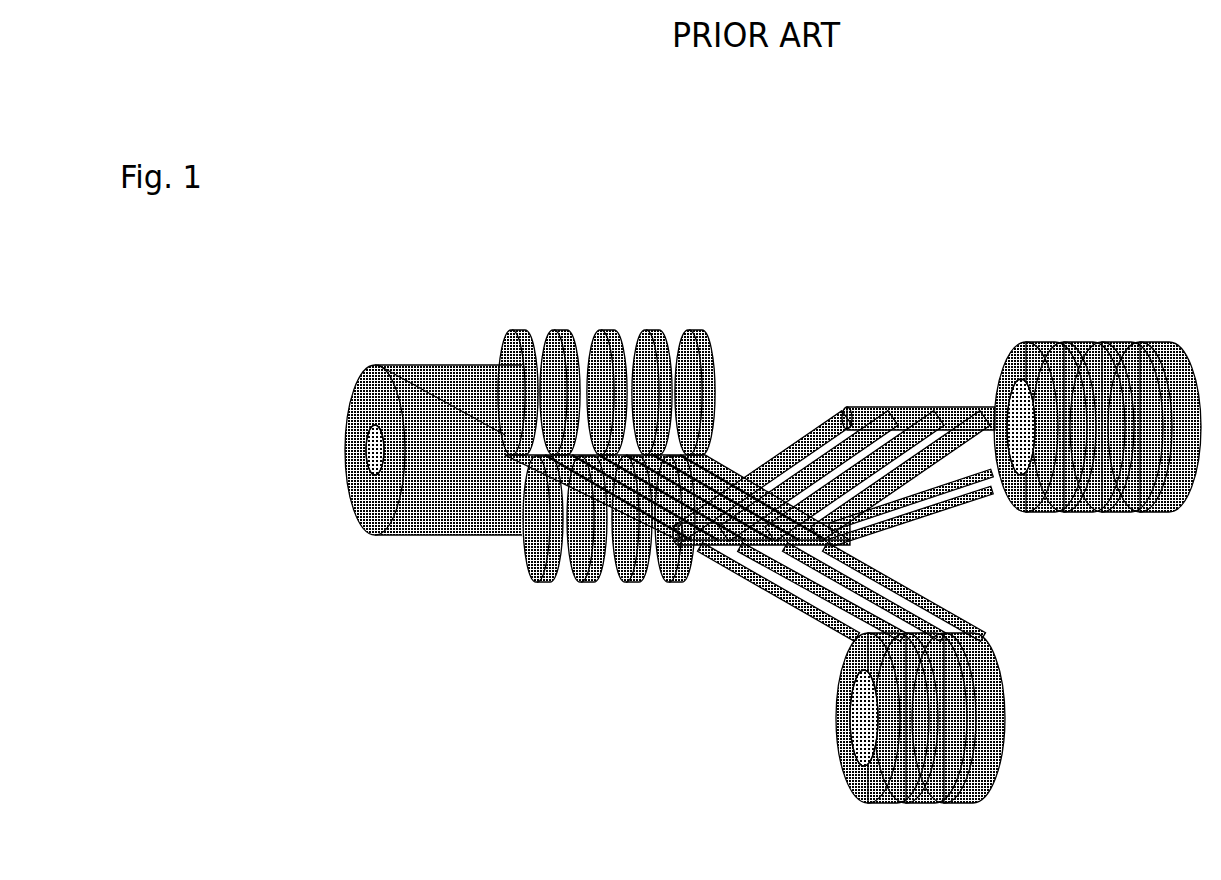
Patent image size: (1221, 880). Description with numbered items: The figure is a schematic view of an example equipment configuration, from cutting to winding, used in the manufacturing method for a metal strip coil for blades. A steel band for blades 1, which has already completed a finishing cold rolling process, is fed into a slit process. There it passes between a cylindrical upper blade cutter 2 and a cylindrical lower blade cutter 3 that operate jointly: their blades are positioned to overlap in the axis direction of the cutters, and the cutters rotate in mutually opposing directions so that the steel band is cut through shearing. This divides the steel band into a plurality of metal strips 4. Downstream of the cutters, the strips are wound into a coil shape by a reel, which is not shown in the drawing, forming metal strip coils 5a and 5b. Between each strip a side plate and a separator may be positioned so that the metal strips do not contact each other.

The steel band for blades 1 is at (448, 373).
The cylindrical upper blade cutter 2 is at (503, 322).
The cylindrical lower blade cutter 3 is at (530, 585).
The metal strips 4 is at (708, 490).
The metal strip coil 5a is at (845, 808).
The metal strip coil 5b is at (1020, 517).